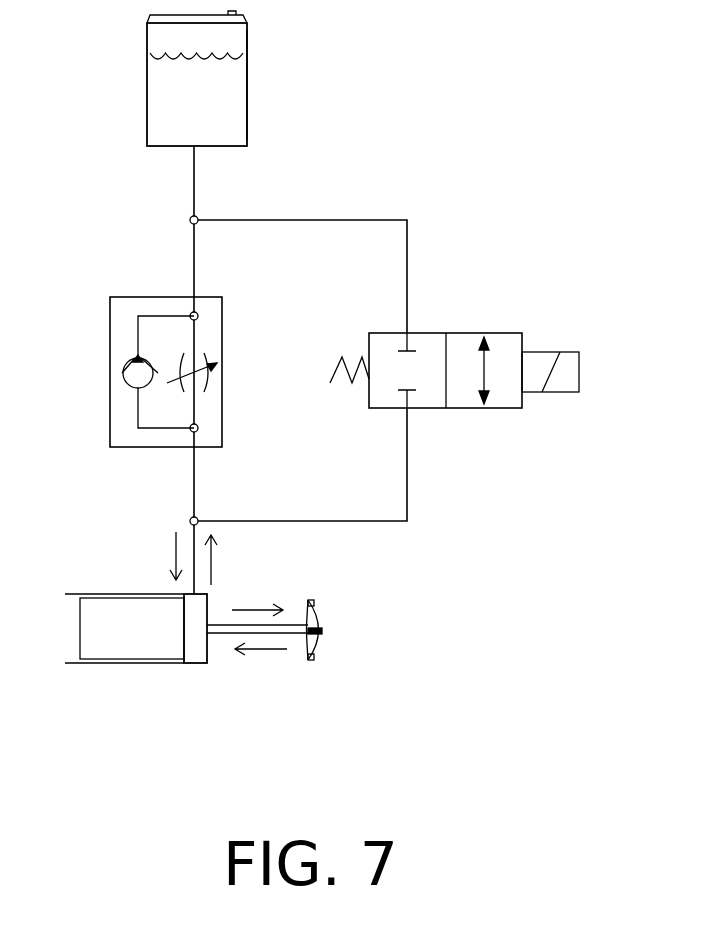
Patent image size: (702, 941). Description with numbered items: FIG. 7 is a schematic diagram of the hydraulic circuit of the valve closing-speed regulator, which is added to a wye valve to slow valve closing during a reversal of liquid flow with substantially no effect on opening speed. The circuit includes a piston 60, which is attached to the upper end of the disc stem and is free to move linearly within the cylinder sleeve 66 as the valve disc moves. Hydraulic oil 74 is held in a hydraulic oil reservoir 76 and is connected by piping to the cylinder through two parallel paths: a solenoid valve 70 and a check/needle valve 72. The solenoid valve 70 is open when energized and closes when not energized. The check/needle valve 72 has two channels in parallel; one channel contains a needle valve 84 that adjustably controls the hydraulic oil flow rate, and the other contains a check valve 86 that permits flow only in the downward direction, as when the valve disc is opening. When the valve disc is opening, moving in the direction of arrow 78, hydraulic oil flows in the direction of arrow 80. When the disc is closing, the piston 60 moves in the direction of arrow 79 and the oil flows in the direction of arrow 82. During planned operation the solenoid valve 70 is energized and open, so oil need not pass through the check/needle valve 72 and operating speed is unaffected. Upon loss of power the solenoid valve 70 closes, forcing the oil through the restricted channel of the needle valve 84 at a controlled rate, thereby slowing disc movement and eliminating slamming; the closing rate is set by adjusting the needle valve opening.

The piston 60 is at (193, 672).
The cylinder sleeve 66 is at (196, 665).
The solenoid valve 70 is at (505, 333).
The check/needle valve 72 is at (160, 370).
The hydraulic oil 74 is at (217, 118).
The hydraulic oil reservoir 76 is at (247, 88).
The arrow 78 is at (275, 650).
The arrow 79 is at (243, 608).
The arrow 80 is at (174, 550).
The arrow 82 is at (212, 567).
The needle valve 84 is at (215, 340).
The check valve 86 is at (122, 390).